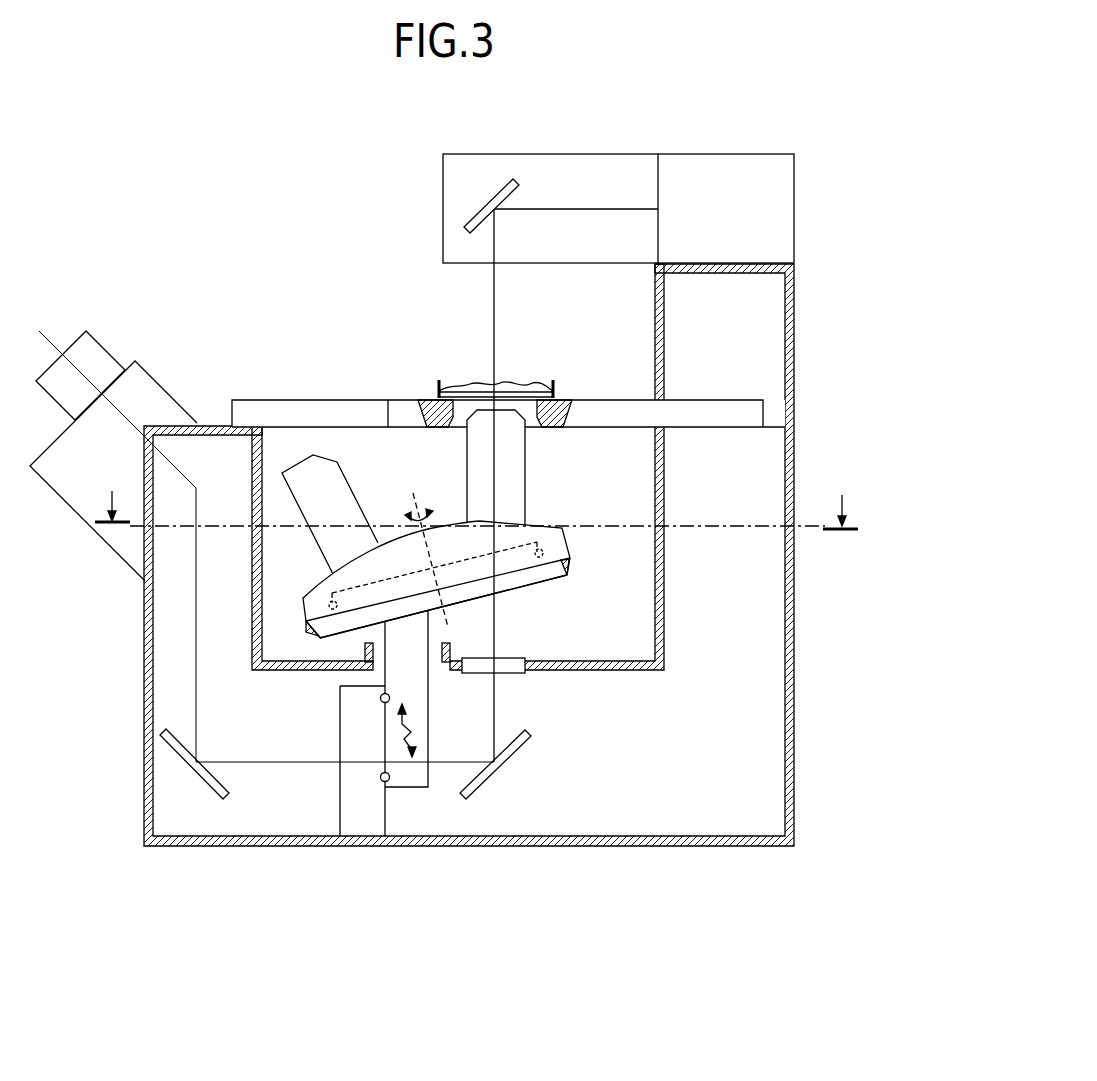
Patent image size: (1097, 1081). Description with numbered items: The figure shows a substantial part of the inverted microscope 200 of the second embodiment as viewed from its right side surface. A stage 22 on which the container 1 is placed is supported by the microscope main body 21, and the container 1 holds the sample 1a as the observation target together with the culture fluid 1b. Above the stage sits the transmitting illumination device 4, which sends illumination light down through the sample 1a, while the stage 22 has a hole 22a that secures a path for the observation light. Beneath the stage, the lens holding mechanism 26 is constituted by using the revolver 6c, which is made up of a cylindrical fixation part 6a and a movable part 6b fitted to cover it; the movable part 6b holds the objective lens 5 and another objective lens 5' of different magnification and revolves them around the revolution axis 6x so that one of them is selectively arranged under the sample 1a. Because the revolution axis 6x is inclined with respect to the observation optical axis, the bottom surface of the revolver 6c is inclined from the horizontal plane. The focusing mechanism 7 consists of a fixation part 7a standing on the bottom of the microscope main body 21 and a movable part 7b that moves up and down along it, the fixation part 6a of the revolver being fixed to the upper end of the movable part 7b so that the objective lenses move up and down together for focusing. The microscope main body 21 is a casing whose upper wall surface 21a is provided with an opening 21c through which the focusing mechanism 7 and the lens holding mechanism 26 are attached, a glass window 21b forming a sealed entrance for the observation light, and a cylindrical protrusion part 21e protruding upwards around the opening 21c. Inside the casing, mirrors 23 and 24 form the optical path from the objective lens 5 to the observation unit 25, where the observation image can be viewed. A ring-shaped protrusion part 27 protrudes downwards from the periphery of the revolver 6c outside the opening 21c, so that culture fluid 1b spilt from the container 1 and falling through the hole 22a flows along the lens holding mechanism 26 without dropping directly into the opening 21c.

The inverted microscope 200 is at (501, 111).
The transmitting illumination device 4 is at (597, 148).
The observation unit 25 is at (114, 347).
The stage 22 is at (298, 399).
The hole 22a is at (453, 424).
The container 1 is at (439, 382).
The sample 1a is at (460, 384).
The culture fluid 1b is at (479, 390).
The objective lens 5 is at (517, 477).
The objective lens 5' is at (330, 509).
The revolution axis 6x is at (412, 500).
The lens holding mechanism 26 is at (560, 516).
The protrusion part 27 is at (576, 566).
The fixation part 6a is at (527, 573).
The movable part 6b is at (552, 566).
The revolver 6c is at (572, 621).
The microscope main body 21 is at (797, 683).
The upper wall surface 21a is at (612, 673).
The glass window 21b is at (506, 674).
The opening 21c is at (436, 673).
The protrusion part 21e is at (449, 651).
The focusing mechanism 7 is at (465, 878).
The fixation part 7a is at (385, 813).
The movable part 7b is at (415, 787).
The mirror 23 is at (533, 742).
The mirror 24 is at (193, 775).